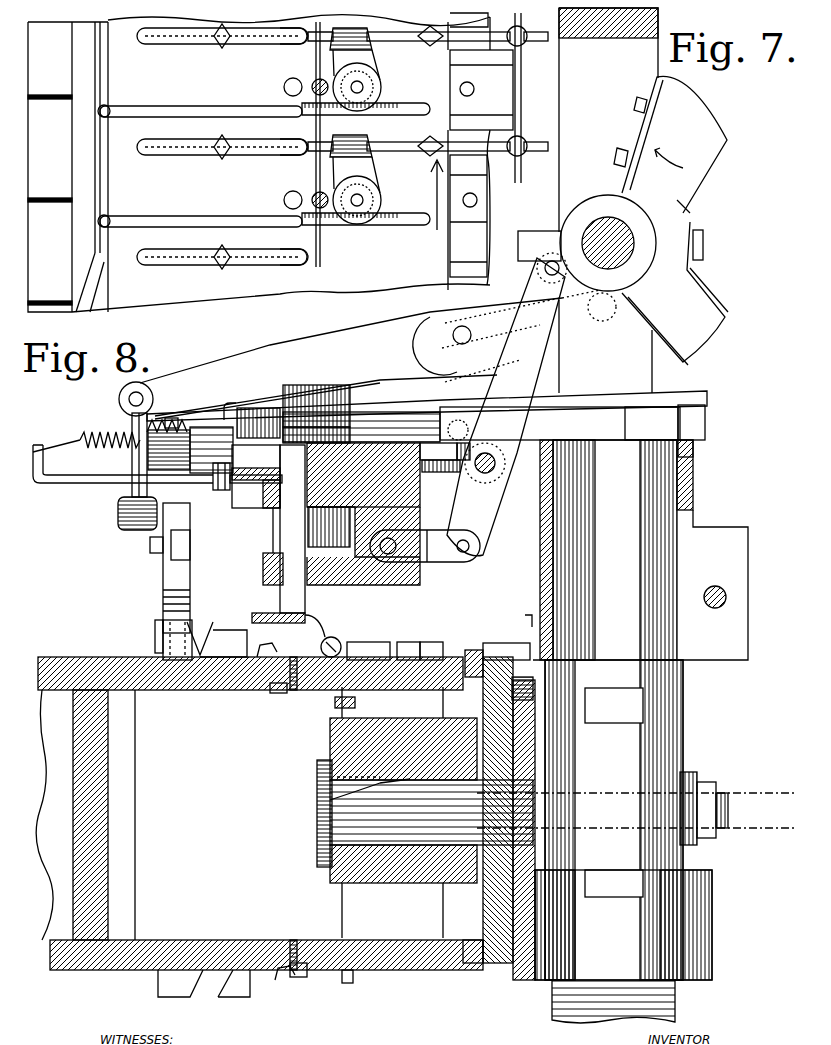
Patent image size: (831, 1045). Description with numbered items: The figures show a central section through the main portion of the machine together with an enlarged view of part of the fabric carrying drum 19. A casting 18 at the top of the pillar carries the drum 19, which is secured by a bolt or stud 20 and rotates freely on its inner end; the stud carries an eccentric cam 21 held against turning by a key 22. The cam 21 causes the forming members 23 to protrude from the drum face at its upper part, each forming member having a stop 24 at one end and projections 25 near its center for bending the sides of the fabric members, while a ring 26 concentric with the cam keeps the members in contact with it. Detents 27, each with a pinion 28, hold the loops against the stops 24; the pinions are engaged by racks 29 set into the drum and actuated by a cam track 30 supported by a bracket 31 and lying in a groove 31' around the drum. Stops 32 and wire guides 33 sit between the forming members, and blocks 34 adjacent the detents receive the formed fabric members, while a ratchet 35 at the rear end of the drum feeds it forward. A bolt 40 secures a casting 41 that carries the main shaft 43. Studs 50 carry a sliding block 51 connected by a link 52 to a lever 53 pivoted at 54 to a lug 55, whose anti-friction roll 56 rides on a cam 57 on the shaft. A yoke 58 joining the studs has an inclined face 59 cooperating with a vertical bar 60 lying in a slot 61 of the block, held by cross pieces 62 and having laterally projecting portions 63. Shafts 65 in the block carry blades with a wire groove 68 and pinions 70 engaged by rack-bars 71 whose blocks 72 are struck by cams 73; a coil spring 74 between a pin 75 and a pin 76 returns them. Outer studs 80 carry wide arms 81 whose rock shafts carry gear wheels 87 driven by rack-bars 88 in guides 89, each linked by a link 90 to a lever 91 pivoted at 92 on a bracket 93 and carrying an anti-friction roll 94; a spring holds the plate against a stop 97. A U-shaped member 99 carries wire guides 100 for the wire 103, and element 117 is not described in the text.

In FIG. 8, the casting 18 is at (712, 925).
In FIG. 7, the drum 19 is at (28, 258).
In FIG. 8, the drum 19 is at (72, 657).
In FIG. 8, the bolt or stud 20 is at (728, 805).
In FIG. 8, the eccentric cam 21 is at (330, 730).
In FIG. 8, the key 22 is at (335, 770).
In FIG. 7, the forming members 23 is at (175, 44).
In FIG. 8, the forming members 23 is at (433, 644).
In FIG. 7, the stop 24 is at (296, 156).
In FIG. 8, the stop 24 is at (372, 985).
In FIG. 7, the projections 25 is at (228, 46).
In FIG. 8, the projections 25 is at (405, 644).
In FIG. 8, the ring 26 is at (335, 701).
In FIG. 7, the detents 27 is at (372, 60).
In FIG. 8, the detents 27 is at (287, 990).
In FIG. 7, the pinion 28 is at (380, 84).
In FIG. 8, the pinion 28 is at (290, 672).
In FIG. 7, the racks 29 is at (222, 106).
In FIG. 7, the cam track 30 is at (97, 75).
In FIG. 8, the cam track 30 is at (472, 652).
In FIG. 8, the bracket 31 is at (507, 784).
In FIG. 7, the groove 31' is at (123, 287).
In FIG. 8, the groove 31' is at (479, 967).
In FIG. 7, the stops 32 is at (290, 79).
In FIG. 7, the wire guides 33 is at (322, 193).
In FIG. 8, the wire guides 33 is at (283, 695).
In FIG. 7, the blocks 34 is at (470, 194).
In FIG. 8, the blocks 34 is at (222, 625).
In FIG. 7, the ratchet 35 is at (62, 275).
In FIG. 8, the ratchet 35 is at (525, 980).
In FIG. 8, the bolt 40 is at (728, 592).
In FIG. 8, the casting 41 is at (693, 490).
In FIG. 8, the main shaft 43 is at (634, 230).
In FIG. 8, the studs 50 is at (222, 492).
In FIG. 8, the block 51 is at (395, 445).
In FIG. 8, the link 52 is at (440, 556).
In FIG. 8, the lever 53 is at (495, 508).
In FIG. 8, the pivot 54 is at (489, 452).
In FIG. 8, the lug 55 is at (458, 430).
In FIG. 8, the anti-friction roll 56 is at (551, 260).
In FIG. 8, the cam 57 is at (690, 218).
In FIG. 8, the yoke 58 is at (253, 480).
In FIG. 8, the inclined face 59 is at (256, 476).
In FIG. 8, the vertical bar 60 is at (281, 534).
In FIG. 8, the slot 61 is at (370, 596).
In FIG. 8, the cross pieces 62 is at (274, 508).
In FIG. 8, the laterally projecting portions 63 is at (240, 662).
In FIG. 8, the shafts 65 is at (325, 432).
In FIG. 8, the groove 68 is at (258, 408).
In FIG. 8, the pinions 70 is at (312, 387).
In FIG. 8, the rack-bars 71 is at (452, 418).
In FIG. 8, the blocks 72 is at (572, 431).
In FIG. 8, the cams 73 is at (670, 144).
In FIG. 8, the coil spring 74 is at (104, 432).
In FIG. 8, the pin 75 is at (100, 482).
In FIG. 8, the pin 76 is at (228, 404).
In FIG. 8, the studs 80 is at (143, 473).
In FIG. 8, the wide arm 81 is at (163, 612).
In FIG. 8, the gear wheel 87 is at (190, 628).
In FIG. 8, the rack-bars 88 is at (165, 594).
In FIG. 8, the guides 89 is at (150, 545).
In FIG. 8, the link 90 is at (146, 456).
In FIG. 8, the lever 91 is at (427, 384).
In FIG. 8, the pivot 92 is at (454, 330).
In FIG. 8, the bracket 93 is at (340, 358).
In FIG. 8, the anti-friction roll 94 is at (606, 322).
In FIG. 8, the stop 97 is at (725, 320).
In FIG. 8, the U-shaped member 99 is at (269, 558).
In FIG. 8, the wire guides 100 is at (338, 640).
In FIG. 7, the wire 103 is at (521, 112).
In FIG. 7, the lever 117 is at (524, 44).